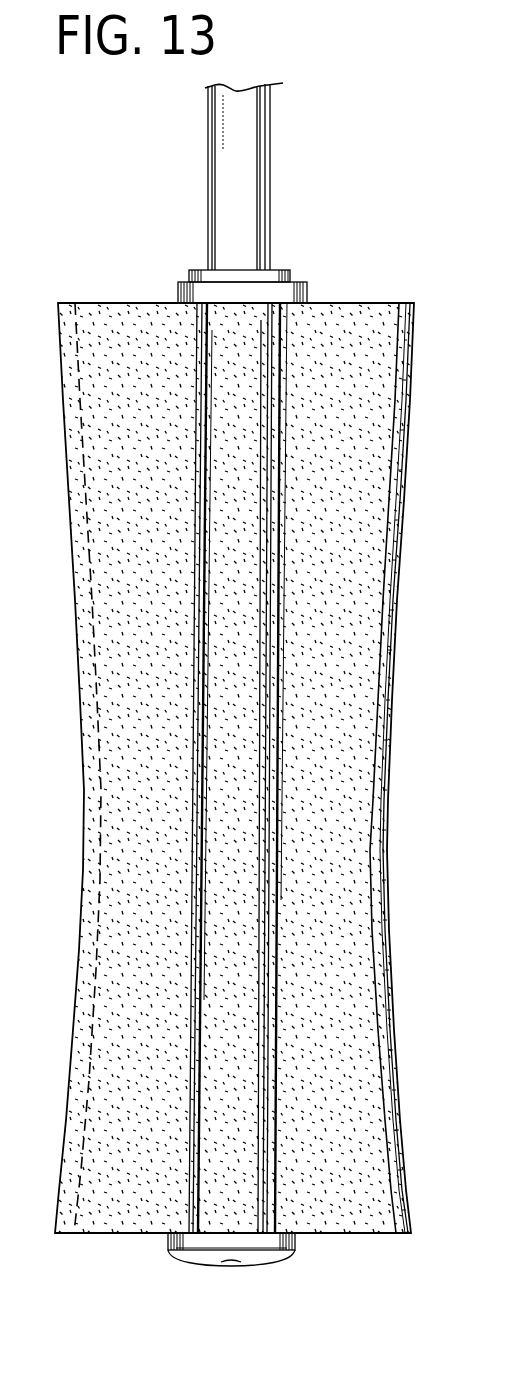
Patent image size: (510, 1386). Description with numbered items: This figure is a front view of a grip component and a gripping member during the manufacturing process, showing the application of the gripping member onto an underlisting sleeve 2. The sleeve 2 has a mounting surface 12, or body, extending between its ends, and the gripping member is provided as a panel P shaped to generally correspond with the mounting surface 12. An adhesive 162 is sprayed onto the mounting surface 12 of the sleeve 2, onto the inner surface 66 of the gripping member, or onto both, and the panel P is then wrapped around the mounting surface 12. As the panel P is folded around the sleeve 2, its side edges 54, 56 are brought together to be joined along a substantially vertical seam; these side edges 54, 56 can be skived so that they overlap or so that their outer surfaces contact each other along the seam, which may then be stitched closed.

The mounting surface 12 is at (239, 871).
The side edge 54 is at (80, 545).
The side edge 56 is at (398, 410).
The adhesive 162 is at (228, 378).
The underlisting sleeve member 2 is at (244, 291).
The panel P is at (347, 312).
The inner surface 66 is at (117, 1212).